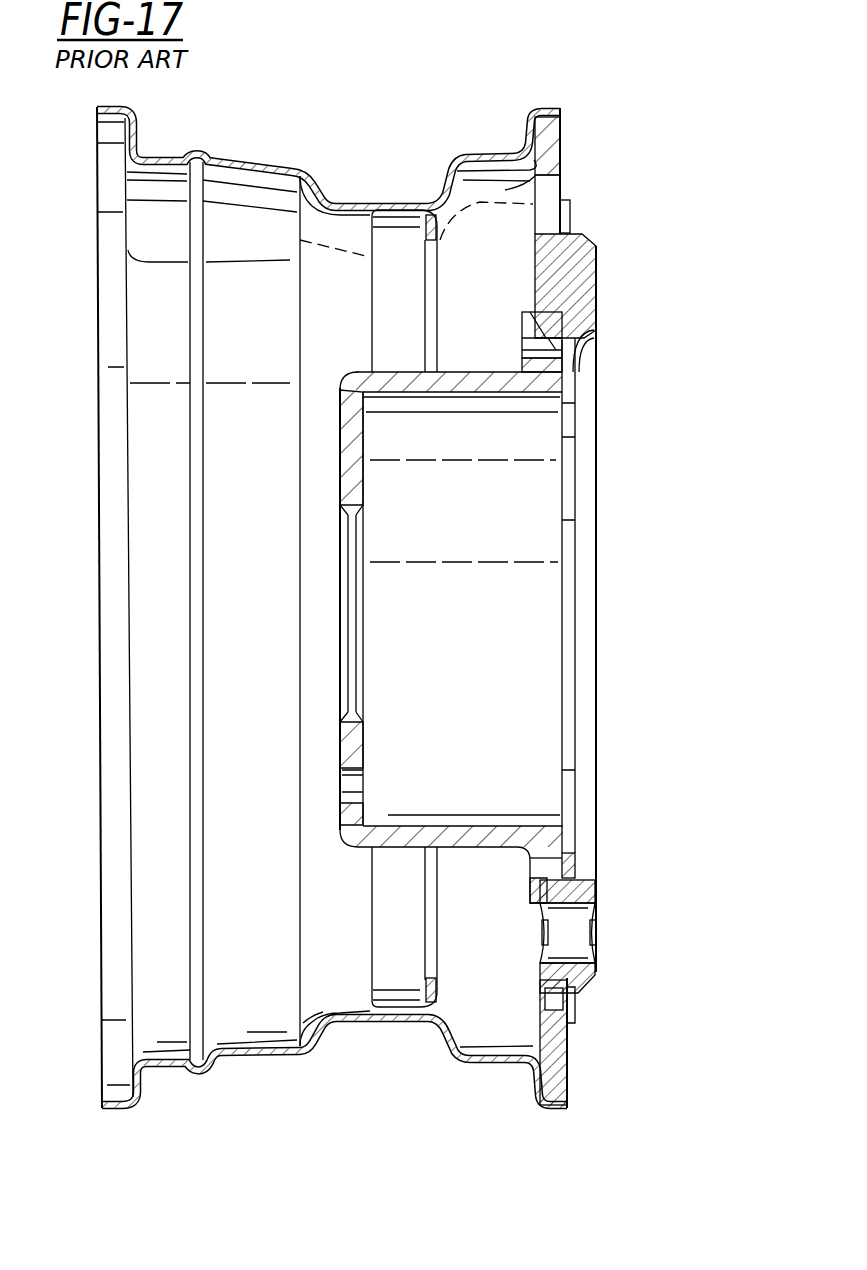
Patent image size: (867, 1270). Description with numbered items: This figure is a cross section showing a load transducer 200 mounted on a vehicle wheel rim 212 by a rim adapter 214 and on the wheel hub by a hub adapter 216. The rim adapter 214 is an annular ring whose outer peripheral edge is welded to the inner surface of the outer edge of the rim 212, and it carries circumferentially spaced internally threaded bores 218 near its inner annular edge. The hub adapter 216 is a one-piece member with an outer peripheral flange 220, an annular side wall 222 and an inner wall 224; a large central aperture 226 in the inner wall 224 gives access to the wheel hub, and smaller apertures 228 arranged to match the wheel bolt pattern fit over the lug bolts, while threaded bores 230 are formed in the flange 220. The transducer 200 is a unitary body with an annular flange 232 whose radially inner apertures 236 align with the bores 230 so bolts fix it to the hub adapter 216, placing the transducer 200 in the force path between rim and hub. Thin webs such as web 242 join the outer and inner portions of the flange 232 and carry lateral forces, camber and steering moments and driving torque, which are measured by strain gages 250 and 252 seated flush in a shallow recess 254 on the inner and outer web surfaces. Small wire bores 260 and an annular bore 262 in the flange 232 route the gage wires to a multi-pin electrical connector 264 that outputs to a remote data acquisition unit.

The load transducer 200 is at (576, 200).
The wheel rim 212 is at (328, 197).
The rim adapter 214 is at (562, 143).
The hub adapter 216 is at (530, 392).
The internally threaded bores 218 is at (540, 178).
The outer peripheral flange 220 is at (580, 843).
The annular side wall 222 is at (497, 826).
The inner wall 224 is at (340, 740).
The central aperture 226 is at (352, 506).
The smaller apertures 228 is at (352, 805).
The bores 230 is at (543, 888).
The annular flange 232 is at (572, 212).
The radially inner apertures 236 is at (585, 872).
The web 242 is at (598, 974).
The strain gage 250 is at (600, 935).
The strain gage 252 is at (541, 935).
The shallow recess 254 is at (597, 911).
The wire bores 260 is at (578, 898).
The annular bore 262 is at (572, 360).
The electrical connector 264 is at (597, 296).